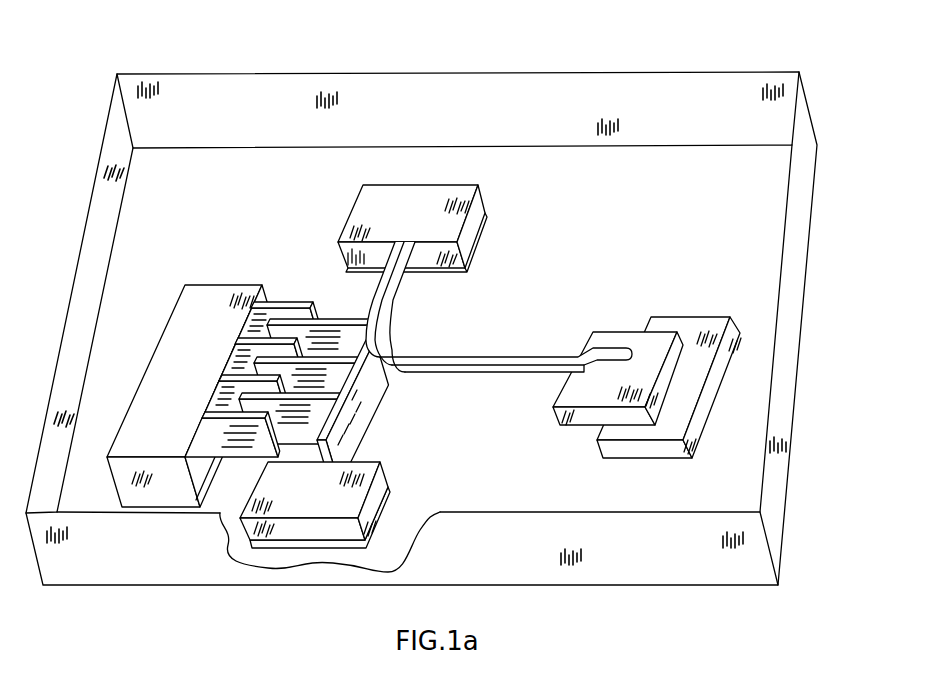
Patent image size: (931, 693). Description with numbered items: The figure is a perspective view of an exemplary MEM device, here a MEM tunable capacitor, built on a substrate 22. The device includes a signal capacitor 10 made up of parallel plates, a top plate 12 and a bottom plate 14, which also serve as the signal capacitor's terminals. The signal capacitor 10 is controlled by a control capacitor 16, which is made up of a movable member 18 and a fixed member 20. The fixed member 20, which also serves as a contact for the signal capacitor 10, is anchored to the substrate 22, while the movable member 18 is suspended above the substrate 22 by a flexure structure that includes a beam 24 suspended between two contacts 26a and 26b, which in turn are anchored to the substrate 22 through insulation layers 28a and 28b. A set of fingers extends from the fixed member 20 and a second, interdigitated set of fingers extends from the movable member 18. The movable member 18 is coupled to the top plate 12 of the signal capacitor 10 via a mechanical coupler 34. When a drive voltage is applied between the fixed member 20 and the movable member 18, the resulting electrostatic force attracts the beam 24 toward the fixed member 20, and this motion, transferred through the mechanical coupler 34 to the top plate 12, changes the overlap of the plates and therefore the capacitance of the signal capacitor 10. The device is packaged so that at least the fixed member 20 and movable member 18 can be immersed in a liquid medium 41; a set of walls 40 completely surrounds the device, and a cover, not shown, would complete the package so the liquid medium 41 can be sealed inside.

The signal capacitor 10 is at (672, 286).
The top plate 12 is at (581, 390).
The bottom plate 14 is at (618, 437).
The control capacitor 16 is at (229, 234).
The movable member 18 is at (385, 415).
The fixed member 20 is at (190, 333).
The substrate 22 is at (776, 183).
The beam 24 is at (396, 302).
The contact 26a is at (450, 205).
The contact 26b is at (365, 471).
The insulation layer 28a is at (482, 248).
The insulation layer 28b is at (385, 512).
The mechanical coupler 34 is at (486, 358).
The walls 40 is at (493, 117).
The liquid medium 41 is at (282, 180).